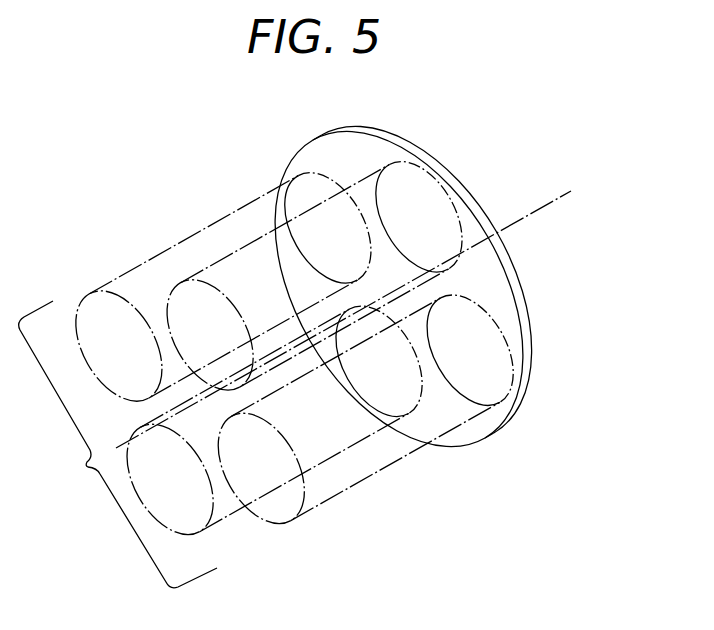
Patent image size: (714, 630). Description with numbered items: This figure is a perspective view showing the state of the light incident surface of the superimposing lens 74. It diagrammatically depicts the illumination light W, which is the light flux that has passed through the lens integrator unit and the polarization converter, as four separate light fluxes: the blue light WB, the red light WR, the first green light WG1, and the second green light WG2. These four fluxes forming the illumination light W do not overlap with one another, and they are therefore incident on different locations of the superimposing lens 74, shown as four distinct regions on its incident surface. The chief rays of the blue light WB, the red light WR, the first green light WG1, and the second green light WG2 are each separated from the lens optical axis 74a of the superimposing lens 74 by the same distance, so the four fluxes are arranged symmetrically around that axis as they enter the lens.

The superimposing lens 74 is at (365, 156).
The lens optical axis 74a is at (537, 217).
The illumination light W is at (317, 366).
The red light WR is at (298, 200).
The first green light WG1 is at (417, 200).
The second green light WG2 is at (489, 353).
The blue light WB is at (376, 393).